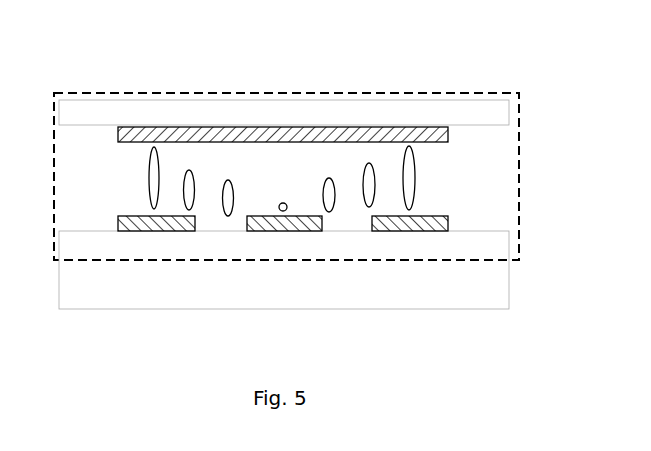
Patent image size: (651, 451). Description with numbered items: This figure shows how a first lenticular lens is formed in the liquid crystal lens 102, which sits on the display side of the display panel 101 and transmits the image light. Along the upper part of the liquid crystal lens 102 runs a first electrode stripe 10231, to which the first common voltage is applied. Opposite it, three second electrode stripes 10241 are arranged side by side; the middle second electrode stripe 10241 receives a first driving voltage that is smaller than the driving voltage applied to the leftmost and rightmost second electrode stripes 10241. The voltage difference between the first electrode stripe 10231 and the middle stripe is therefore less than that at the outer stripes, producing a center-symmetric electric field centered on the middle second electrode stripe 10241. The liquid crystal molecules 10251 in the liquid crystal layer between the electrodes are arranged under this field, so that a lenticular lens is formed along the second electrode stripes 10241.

The display panel 101 is at (107, 296).
The liquid crystal lens 102 is at (72, 93).
The first electrode stripes 10231 is at (348, 135).
The second electrode stripes 10241 is at (435, 224).
The liquid crystal molecules 10251 is at (189, 170).